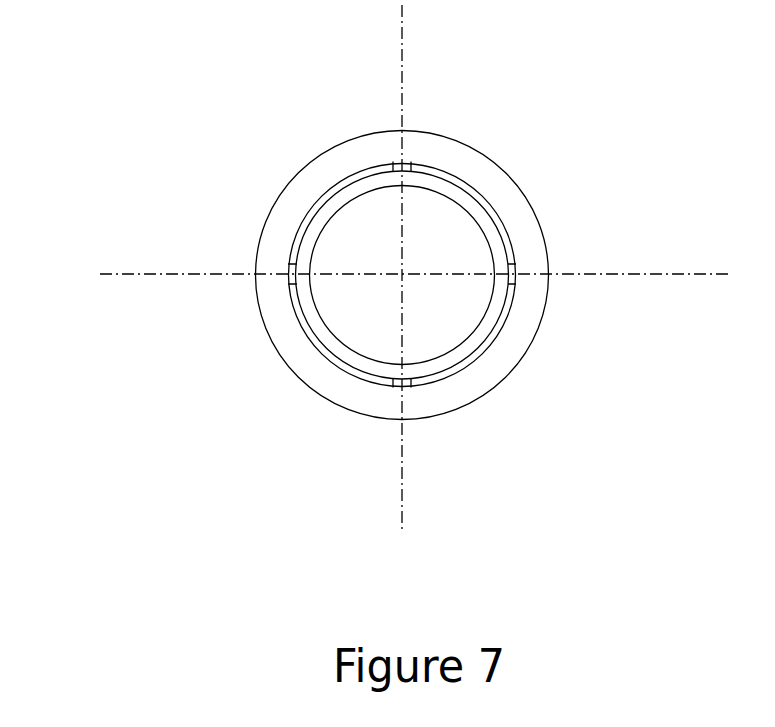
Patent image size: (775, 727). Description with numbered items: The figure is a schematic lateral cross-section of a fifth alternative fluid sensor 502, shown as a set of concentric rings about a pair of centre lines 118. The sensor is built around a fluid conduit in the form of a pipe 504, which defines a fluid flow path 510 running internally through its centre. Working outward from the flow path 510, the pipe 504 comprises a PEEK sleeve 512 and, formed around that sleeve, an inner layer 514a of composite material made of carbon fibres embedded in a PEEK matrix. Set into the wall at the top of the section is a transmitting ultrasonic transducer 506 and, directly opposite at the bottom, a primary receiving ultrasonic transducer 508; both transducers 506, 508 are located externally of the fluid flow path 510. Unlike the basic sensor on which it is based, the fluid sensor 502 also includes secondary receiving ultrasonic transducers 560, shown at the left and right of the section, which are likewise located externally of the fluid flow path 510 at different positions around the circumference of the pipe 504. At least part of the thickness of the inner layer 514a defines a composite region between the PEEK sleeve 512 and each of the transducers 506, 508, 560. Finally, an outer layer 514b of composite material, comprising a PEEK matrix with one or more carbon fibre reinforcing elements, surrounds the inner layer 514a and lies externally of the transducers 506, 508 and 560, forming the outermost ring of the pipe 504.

The center axis 118 is at (402, 103).
The fifth alternative fluid sensor 502 is at (176, 590).
The pipe 504 is at (295, 409).
The transmitting ultrasonic transducer 506 is at (405, 388).
The primary receiving ultrasonic transducer 508 is at (408, 160).
The fluid flow path 510 is at (395, 320).
The PEEK sleeve 512 is at (463, 200).
The inner layer of composite material 514a is at (505, 223).
The outer layer of composite material 514b is at (535, 252).
The secondary receiving ultrasonic transducers 560 is at (514, 283).